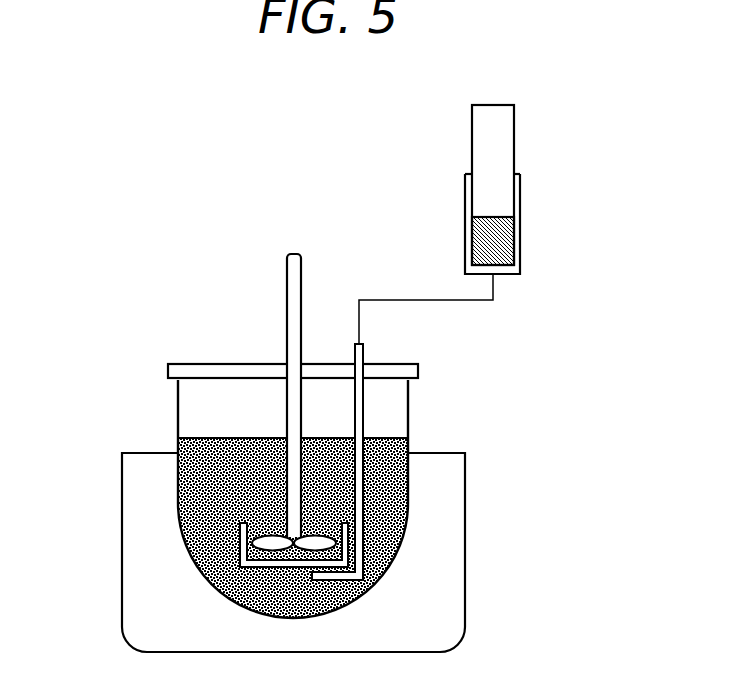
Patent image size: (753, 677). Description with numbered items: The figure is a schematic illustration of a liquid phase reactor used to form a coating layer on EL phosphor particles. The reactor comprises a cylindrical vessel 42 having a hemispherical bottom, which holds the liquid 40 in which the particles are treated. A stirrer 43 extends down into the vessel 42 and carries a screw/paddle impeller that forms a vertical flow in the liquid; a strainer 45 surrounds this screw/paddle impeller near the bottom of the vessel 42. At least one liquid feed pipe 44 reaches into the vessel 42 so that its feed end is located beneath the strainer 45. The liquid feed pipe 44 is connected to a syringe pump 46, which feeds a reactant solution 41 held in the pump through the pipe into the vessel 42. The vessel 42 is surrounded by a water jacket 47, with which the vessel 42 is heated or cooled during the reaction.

The electrolytic solution 40 is at (215, 456).
The reactant solution 41 is at (498, 243).
The cylindrical vessel 42 is at (398, 548).
The stirrer 43 is at (287, 303).
The liquid feed pipe 44 is at (365, 393).
The strainer 45 is at (240, 550).
The syringe pump 46 is at (522, 197).
The water jacket 47 is at (466, 495).